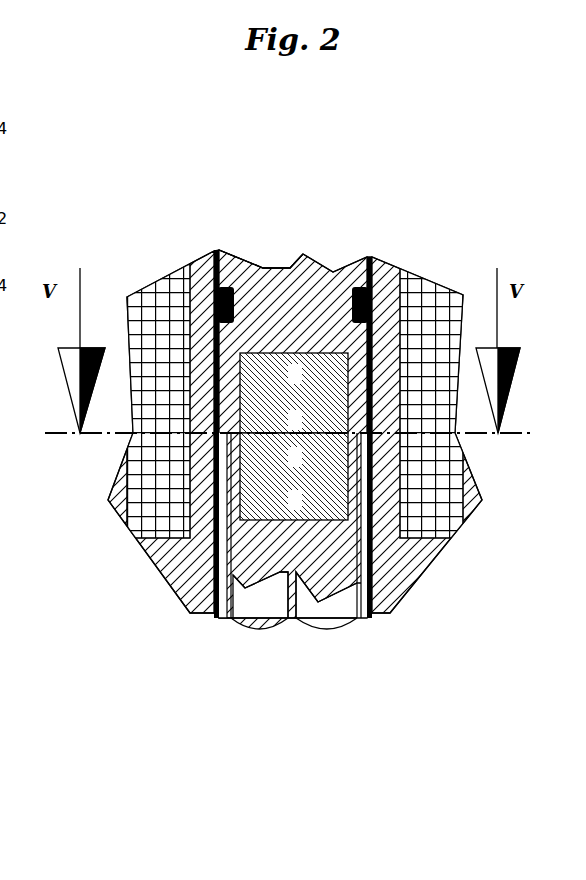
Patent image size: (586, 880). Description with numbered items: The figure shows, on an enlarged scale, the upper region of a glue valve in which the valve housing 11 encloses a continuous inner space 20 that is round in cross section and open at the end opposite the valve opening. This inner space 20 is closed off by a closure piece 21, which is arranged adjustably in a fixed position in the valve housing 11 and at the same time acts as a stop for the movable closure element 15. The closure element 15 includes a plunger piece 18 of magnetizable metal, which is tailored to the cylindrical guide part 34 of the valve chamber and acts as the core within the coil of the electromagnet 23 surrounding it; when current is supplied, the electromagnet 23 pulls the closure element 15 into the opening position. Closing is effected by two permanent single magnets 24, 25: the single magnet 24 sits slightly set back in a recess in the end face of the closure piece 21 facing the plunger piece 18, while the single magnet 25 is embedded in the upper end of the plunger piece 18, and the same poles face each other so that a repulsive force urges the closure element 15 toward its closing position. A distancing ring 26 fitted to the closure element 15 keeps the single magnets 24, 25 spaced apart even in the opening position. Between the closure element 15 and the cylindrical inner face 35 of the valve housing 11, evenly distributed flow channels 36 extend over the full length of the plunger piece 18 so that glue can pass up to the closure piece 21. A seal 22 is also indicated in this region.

The valve housing 11 is at (145, 597).
The closure element 15 is at (270, 648).
The plunger piece 18 is at (323, 550).
The inner space 20 is at (230, 543).
The closure piece 21 is at (308, 300).
The seal 22 is at (252, 268).
The electromagnet 23 is at (150, 282).
The single magnet 24 is at (273, 392).
The single magnet 25 is at (328, 483).
The distancing ring 26 is at (370, 437).
The guide part 34 is at (198, 273).
The inner face 35 is at (232, 258).
The flow channel 36 is at (343, 620).